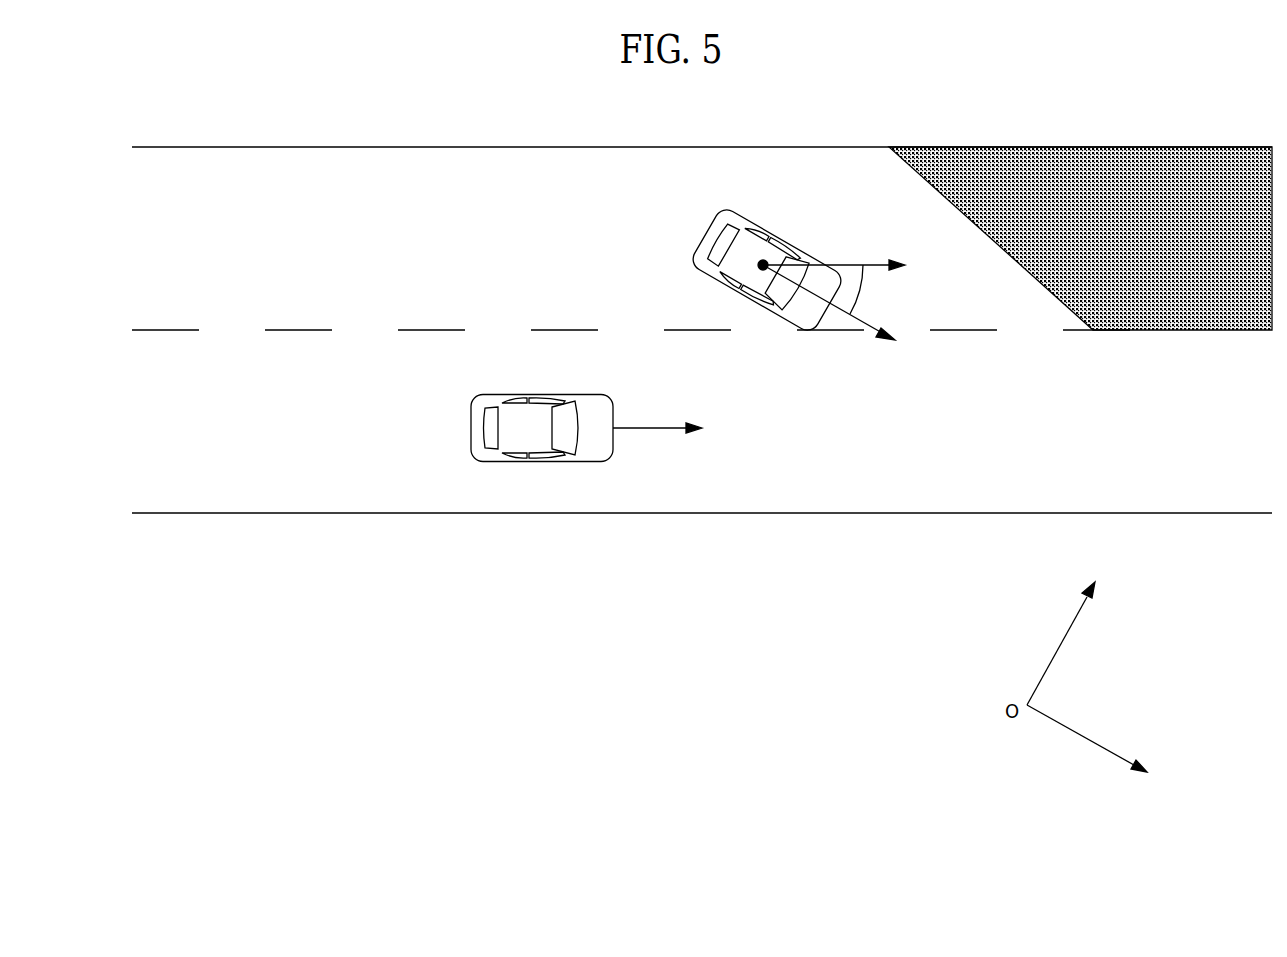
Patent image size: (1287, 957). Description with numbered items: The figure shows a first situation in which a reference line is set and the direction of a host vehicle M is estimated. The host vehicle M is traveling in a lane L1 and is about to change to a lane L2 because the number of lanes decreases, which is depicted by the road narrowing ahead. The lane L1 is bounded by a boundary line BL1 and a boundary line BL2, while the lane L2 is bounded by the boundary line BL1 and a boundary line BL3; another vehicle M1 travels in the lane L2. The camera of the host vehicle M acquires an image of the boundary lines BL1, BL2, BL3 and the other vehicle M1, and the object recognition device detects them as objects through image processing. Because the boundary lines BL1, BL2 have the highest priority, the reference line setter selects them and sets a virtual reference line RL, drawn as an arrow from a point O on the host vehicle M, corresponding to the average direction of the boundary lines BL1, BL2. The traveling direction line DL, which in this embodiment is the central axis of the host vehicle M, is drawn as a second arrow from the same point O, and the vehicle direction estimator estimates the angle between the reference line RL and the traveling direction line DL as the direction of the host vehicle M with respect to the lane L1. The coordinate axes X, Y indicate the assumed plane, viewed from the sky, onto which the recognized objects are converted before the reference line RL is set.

The boundary line BL1 is at (298, 333).
The boundary line BL2 is at (298, 150).
The boundary line BL3 is at (298, 516).
The lane L1 is at (132, 256).
The lane L2 is at (132, 436).
The host vehicle M is at (712, 238).
The other vehicle M1 is at (471, 428).
The reference point of host vehicle O is at (758, 276).
The reference line RL is at (855, 262).
The direction line (travel direction) DL is at (842, 312).
The X axis X is at (1096, 747).
The Y axis Y is at (1066, 630).